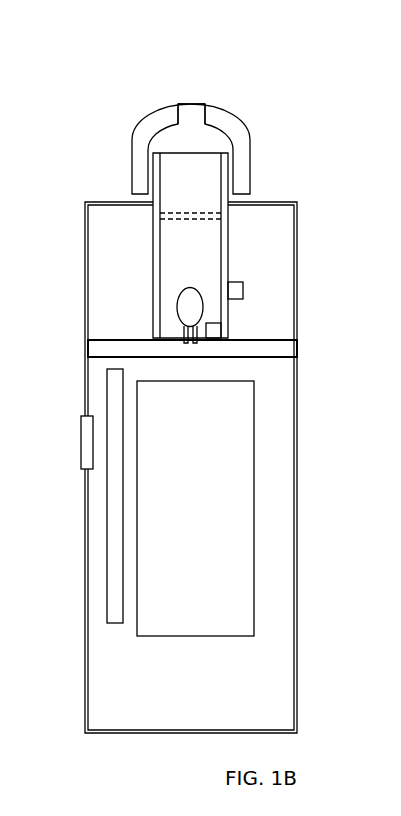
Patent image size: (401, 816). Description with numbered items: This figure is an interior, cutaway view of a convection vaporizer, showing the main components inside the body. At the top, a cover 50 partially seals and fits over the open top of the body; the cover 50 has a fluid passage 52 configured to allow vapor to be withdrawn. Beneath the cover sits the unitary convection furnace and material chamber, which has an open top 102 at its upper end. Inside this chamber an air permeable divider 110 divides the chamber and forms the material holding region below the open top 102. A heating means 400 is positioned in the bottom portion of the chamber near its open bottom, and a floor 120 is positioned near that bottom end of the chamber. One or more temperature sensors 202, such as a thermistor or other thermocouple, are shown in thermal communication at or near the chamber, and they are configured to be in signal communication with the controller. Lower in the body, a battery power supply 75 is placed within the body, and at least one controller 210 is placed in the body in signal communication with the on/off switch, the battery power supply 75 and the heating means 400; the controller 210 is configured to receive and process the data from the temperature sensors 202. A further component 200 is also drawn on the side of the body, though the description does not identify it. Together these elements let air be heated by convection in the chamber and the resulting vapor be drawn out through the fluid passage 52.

The cover 50 is at (233, 132).
The fluid passage 52 is at (195, 103).
The open top 102 is at (196, 156).
The air permeable divider 110 is at (187, 225).
The heating means 400 is at (190, 309).
The floor 120 is at (105, 352).
The temperature sensor 202 is at (237, 292).
The side connector 200 is at (85, 447).
The controller 210 is at (113, 481).
The battery power supply 75 is at (195, 508).